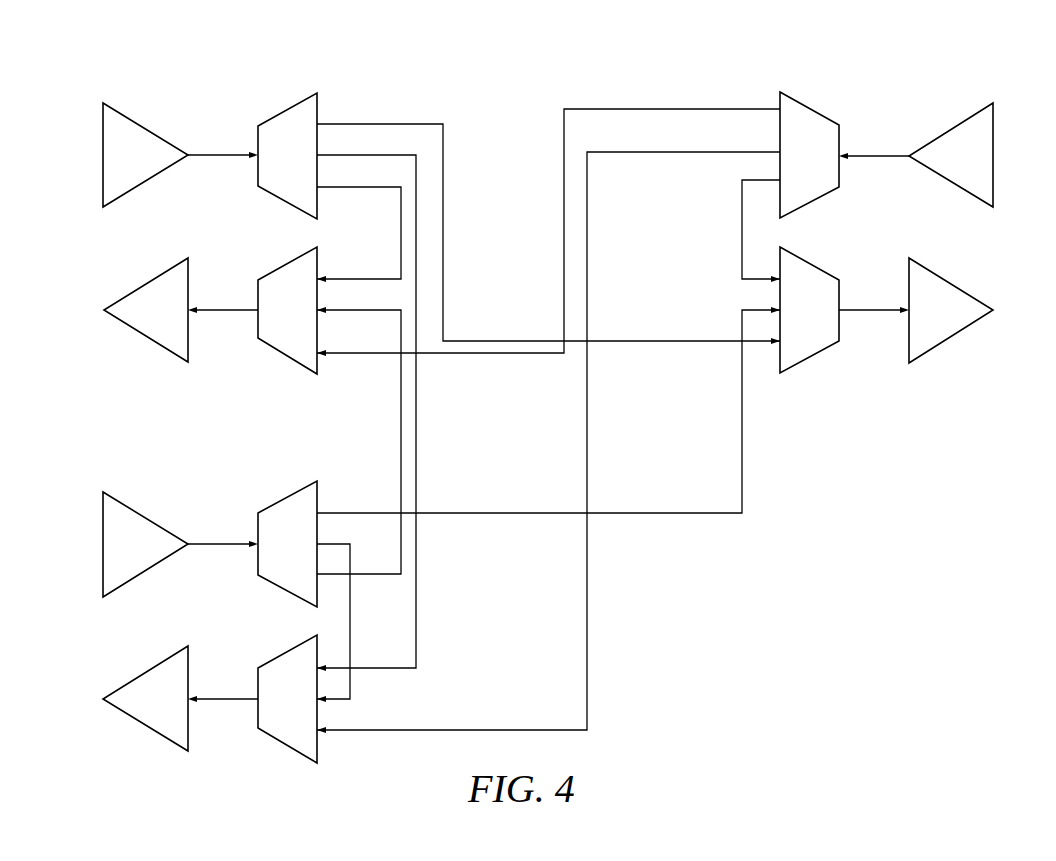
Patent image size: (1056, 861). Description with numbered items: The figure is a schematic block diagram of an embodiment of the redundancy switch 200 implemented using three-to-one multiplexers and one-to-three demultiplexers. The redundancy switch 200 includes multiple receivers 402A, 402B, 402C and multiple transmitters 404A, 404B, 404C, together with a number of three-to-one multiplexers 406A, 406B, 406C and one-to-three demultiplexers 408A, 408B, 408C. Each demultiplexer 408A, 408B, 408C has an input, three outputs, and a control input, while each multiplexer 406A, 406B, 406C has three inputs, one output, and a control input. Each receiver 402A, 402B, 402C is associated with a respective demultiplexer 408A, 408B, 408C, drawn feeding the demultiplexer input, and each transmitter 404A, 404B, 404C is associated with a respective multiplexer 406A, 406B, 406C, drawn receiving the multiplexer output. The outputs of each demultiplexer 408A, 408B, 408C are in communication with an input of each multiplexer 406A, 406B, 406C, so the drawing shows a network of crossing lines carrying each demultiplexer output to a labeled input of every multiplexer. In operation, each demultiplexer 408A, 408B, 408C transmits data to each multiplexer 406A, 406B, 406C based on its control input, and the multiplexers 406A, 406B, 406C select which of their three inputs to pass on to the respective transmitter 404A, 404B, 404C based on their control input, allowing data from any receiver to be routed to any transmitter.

The redundancy switch 200 is at (198, 70).
The receiver 402A is at (103, 155).
The receiver 402B is at (103, 544).
The receiver 402C is at (993, 156).
The transmitter 404A is at (104, 310).
The transmitter 404B is at (103, 699).
The transmitter 404C is at (993, 310).
The 3:1 multiplexer 406A is at (290, 262).
The 3:1 multiplexer 406B is at (290, 650).
The 3:1 multiplexer 406C is at (810, 262).
The 1:3 demultiplexer 408A is at (290, 108).
The 1:3 demultiplexer 408B is at (290, 496).
The 1:3 demultiplexer 408C is at (810, 107).